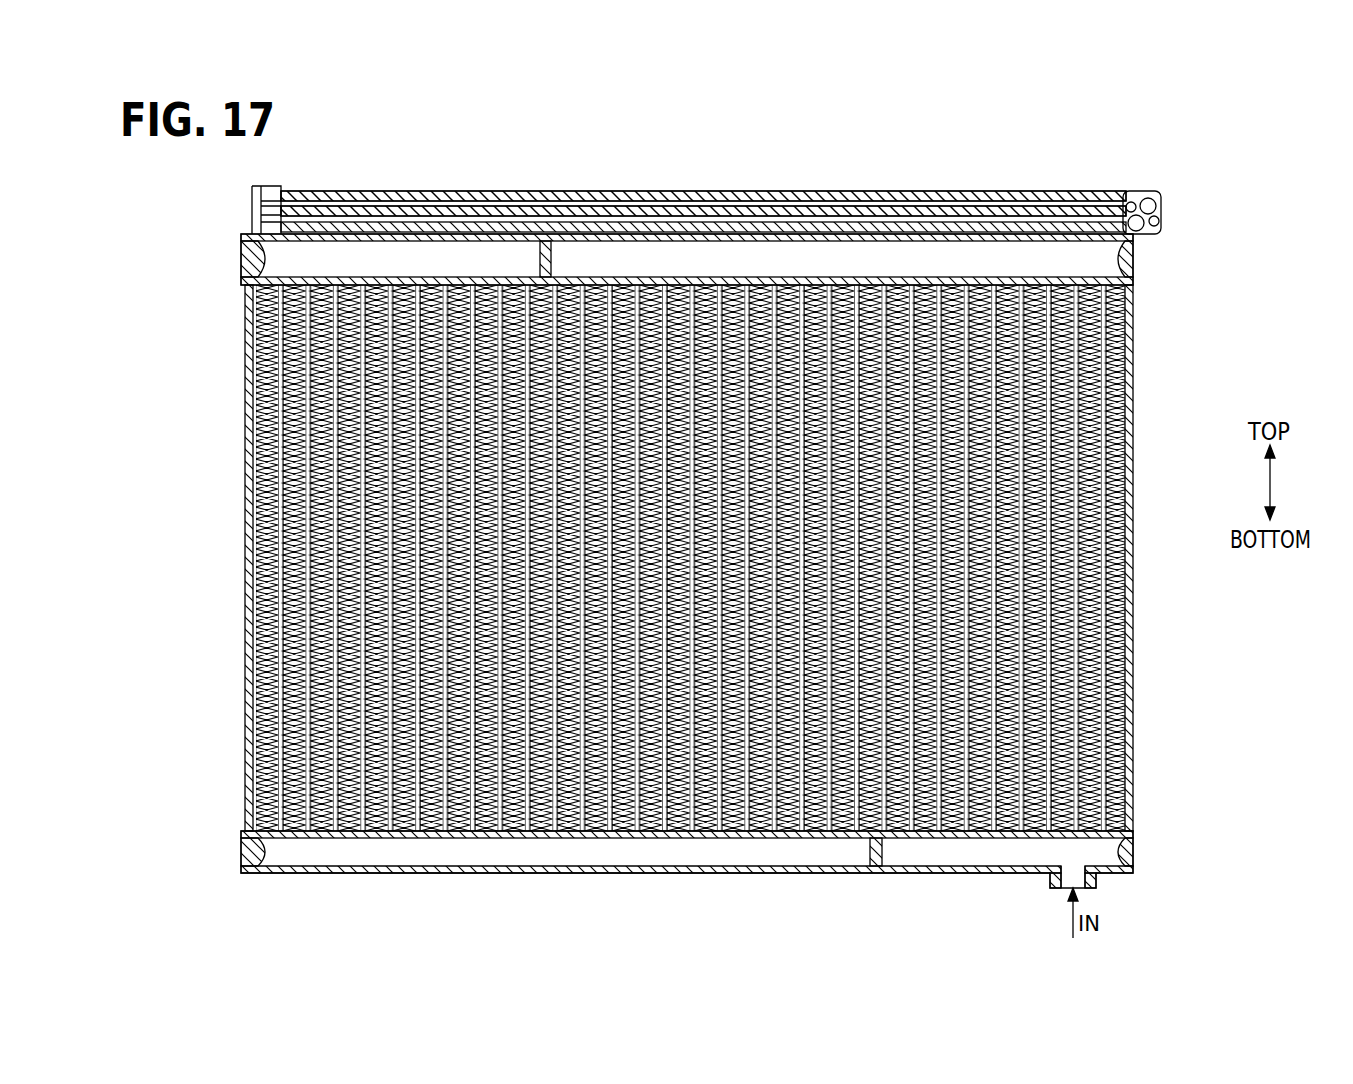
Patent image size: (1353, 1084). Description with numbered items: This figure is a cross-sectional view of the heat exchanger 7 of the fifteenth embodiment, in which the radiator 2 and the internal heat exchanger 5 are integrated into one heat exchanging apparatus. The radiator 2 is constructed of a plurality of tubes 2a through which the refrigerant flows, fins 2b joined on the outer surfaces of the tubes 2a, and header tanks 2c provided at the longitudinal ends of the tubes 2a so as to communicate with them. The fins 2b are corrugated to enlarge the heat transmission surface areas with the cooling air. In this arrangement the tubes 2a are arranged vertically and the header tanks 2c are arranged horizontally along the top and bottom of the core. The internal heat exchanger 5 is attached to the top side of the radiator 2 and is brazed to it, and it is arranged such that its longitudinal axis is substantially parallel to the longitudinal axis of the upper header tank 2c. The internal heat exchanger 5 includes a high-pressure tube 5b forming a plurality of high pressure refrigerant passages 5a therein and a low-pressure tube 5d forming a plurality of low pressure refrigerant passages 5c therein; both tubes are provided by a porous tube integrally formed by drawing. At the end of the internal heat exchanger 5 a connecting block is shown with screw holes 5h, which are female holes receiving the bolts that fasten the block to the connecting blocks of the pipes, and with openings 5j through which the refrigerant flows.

The radiator 2 is at (698, 534).
The tubes 2a is at (1082, 490).
The fins 2b is at (1092, 529).
The header tanks 2c is at (915, 252).
The internal heat exchanger 5 is at (740, 212).
The high pressure refrigerant passages 5a is at (661, 212).
The high-pressure tube 5b is at (703, 196).
The low pressure refrigerant passages 5c is at (787, 200).
The low-pressure tube 5d is at (703, 211).
The screw holes 5h is at (1122, 194).
The openings 5j is at (1142, 190).
The heat exchanger 7 is at (238, 702).